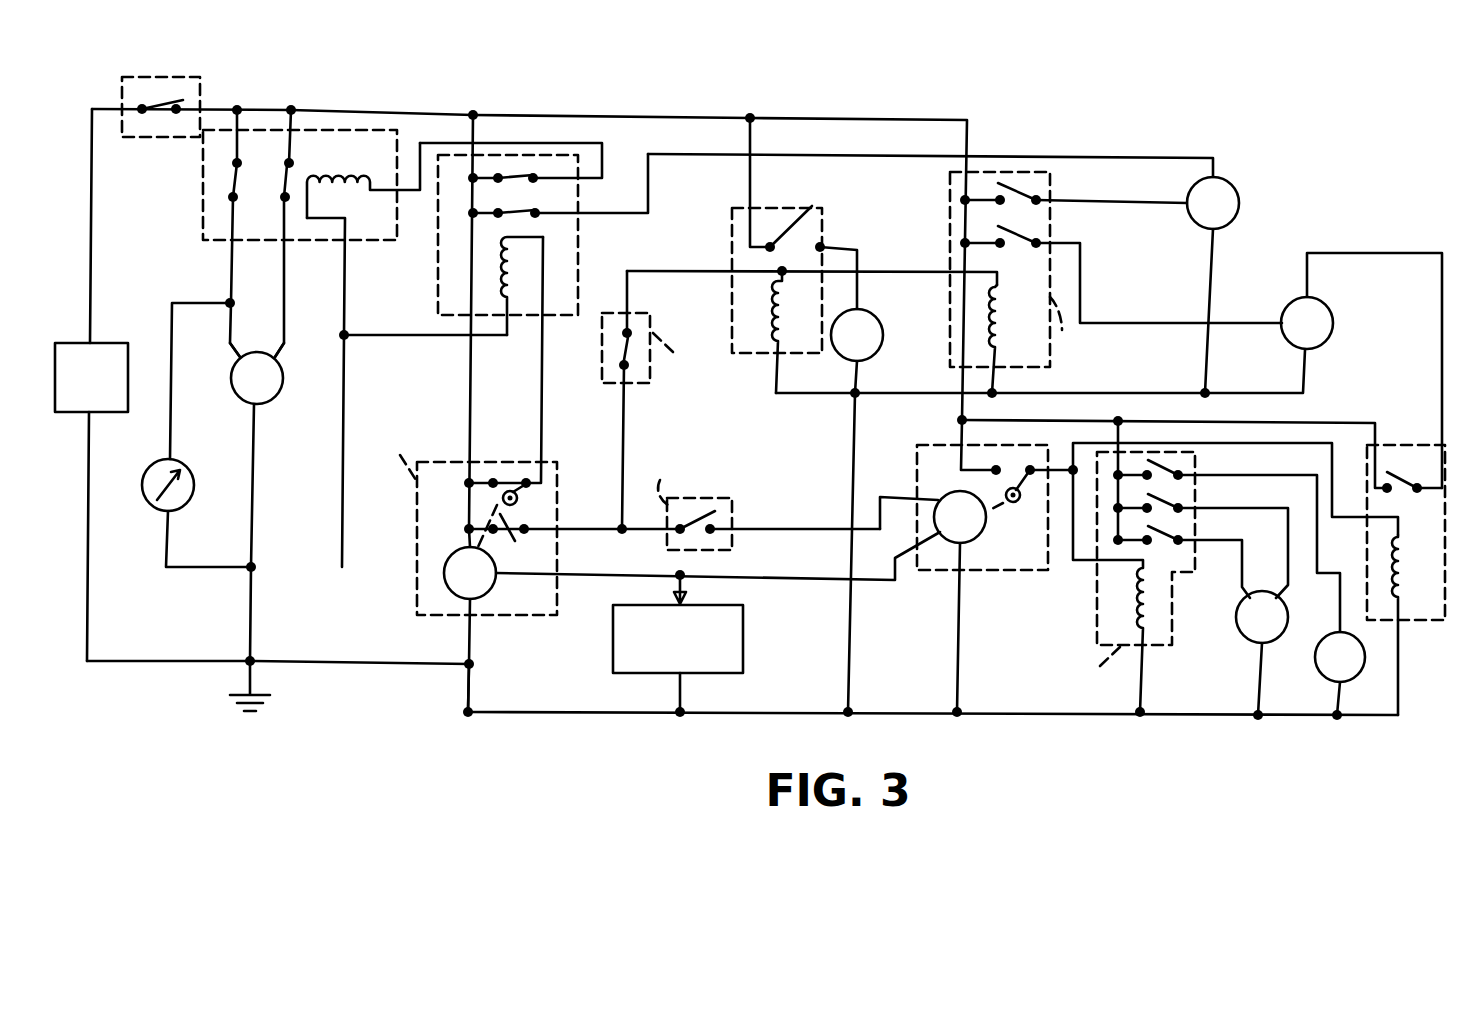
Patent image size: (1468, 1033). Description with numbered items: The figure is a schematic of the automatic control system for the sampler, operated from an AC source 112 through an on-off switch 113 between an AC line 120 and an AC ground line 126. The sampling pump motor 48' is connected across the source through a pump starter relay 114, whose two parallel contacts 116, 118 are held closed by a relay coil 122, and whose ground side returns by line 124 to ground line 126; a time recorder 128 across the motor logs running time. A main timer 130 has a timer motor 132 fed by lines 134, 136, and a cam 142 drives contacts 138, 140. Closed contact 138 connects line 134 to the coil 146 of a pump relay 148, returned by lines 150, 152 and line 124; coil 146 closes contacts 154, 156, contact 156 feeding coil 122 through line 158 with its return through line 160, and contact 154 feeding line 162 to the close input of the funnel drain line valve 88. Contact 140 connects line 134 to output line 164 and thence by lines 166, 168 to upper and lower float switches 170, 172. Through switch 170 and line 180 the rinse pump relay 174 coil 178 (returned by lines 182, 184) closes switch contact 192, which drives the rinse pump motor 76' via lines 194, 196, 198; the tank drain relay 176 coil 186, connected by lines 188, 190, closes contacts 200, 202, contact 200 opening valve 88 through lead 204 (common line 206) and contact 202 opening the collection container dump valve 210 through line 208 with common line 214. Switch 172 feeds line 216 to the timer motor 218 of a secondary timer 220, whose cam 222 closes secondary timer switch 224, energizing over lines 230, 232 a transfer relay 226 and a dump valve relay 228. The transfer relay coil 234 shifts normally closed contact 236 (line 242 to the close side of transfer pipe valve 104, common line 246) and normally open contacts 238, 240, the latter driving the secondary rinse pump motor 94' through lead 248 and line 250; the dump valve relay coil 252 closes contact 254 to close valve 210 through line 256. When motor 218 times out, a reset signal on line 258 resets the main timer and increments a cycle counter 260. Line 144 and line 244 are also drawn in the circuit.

The motor 48' is at (249, 398).
The drive motor 76' is at (880, 330).
The funnel drain line valve 88 is at (1234, 208).
The drive motor 94' is at (1329, 672).
The transfer pipe valve 104 is at (1251, 630).
The AC source 112 is at (118, 341).
The on-off switch 113 is at (205, 86).
The pump starter relay 114 is at (198, 222).
The contact 116 is at (229, 180).
The contact 118 is at (291, 178).
The AC line 120 is at (267, 105).
The relay coil 122 is at (363, 184).
The line 124 is at (255, 520).
The AC ground line 126 is at (156, 662).
The time recorder 128 is at (147, 497).
The main timer 130 is at (415, 503).
The timer motor 132 is at (458, 590).
The line 134 is at (478, 131).
The line 136 is at (473, 645).
The contact 138 is at (513, 478).
The contact 140 is at (543, 543).
The cam 142 is at (516, 497).
The line 144 is at (544, 438).
The coil 146 is at (512, 258).
The pump relay 148 is at (580, 243).
The line 150 is at (428, 340).
The line 152 is at (346, 375).
The contact 154 is at (518, 208).
The contact 156 is at (517, 172).
The line 158 is at (600, 142).
The line 160 is at (346, 247).
The line 162 is at (689, 157).
The output line 164 is at (575, 532).
The line 166 is at (628, 410).
The line 168 is at (634, 531).
The float switch 170 is at (656, 312).
The float switch 172 is at (720, 552).
The rinse pump relay 174 is at (832, 226).
The tank drain relay 176 is at (1053, 183).
The coil 178 is at (781, 302).
The line 180 is at (665, 272).
The line 182 is at (768, 378).
The line 184 is at (852, 470).
The relay coil 186 is at (1000, 296).
The line 188 is at (1000, 382).
The line 190 is at (866, 400).
The switch contact 192 is at (808, 215).
The line 194 is at (752, 186).
The line 196 is at (862, 251).
The line 198 is at (853, 376).
The switch contact 200 is at (1018, 186).
The switch contact 202 is at (1015, 229).
The lead 204 is at (1132, 201).
The line 206 is at (1212, 279).
The line 208 is at (1140, 323).
The collection container dump valve 210 is at (1335, 325).
The common line 214 is at (1308, 380).
The line 216 is at (833, 530).
The timer motor 218 is at (975, 528).
The secondary timer 220 is at (946, 573).
The cam 222 is at (1000, 492).
The secondary timer switch 224 is at (995, 447).
The transfer relay 226 is at (1173, 642).
The dump valve relay 228 is at (1385, 440).
The line 230 is at (1078, 428).
The line 232 is at (1323, 447).
The relay coil 234 is at (1127, 605).
The normally closed contact 236 is at (1185, 540).
The normally open contact 238 is at (1172, 497).
The normally open contact 240 is at (1165, 463).
The line 242 is at (1245, 577).
The line 244 is at (1274, 512).
The line 246 is at (1257, 692).
The lead 248 is at (1320, 568).
The line 250 is at (1342, 708).
The relay coil 252 is at (1400, 553).
The contact 254 is at (1403, 448).
The line 256 is at (1441, 328).
The line 258 is at (601, 579).
The cycle counter 260 is at (745, 628).